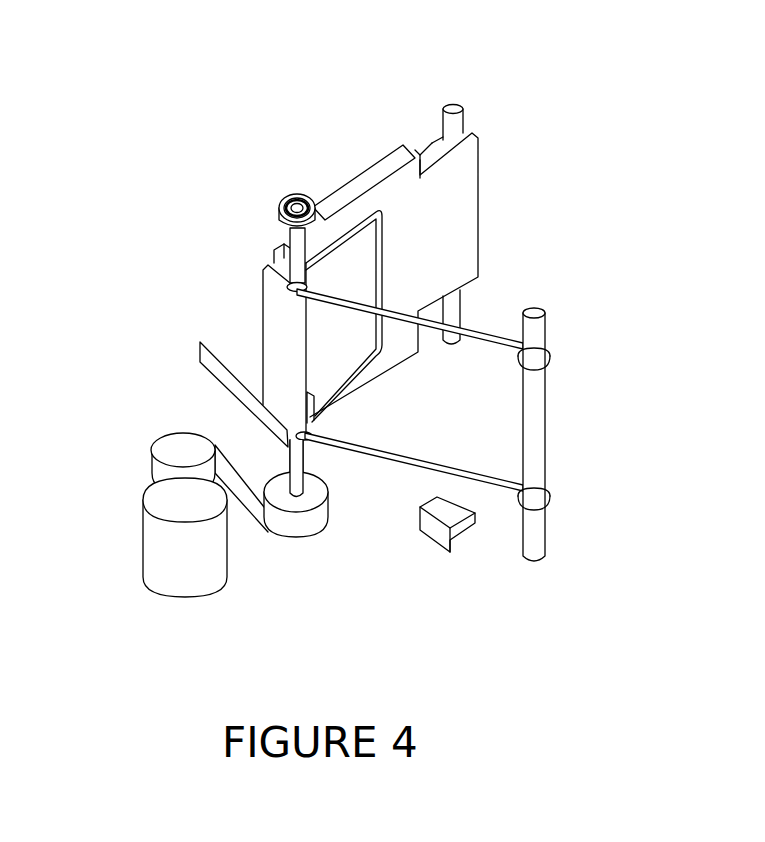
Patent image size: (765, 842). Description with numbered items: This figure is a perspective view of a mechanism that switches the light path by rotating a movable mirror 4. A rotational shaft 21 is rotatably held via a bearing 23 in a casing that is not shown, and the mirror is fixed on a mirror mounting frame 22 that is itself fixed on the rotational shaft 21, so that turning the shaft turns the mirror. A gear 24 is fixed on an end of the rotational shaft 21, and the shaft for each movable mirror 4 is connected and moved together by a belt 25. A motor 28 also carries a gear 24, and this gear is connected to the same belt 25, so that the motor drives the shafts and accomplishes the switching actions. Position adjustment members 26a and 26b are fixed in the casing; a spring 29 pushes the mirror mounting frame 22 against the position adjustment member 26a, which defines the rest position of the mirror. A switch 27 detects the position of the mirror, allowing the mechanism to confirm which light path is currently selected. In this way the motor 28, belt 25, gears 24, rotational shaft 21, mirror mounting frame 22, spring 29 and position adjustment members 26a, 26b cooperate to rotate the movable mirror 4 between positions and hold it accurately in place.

The movable mirror 4 is at (430, 150).
The rotational shaft 21 is at (298, 458).
The mirror mounting frame 22 is at (460, 205).
The bearing 23 is at (278, 222).
The gear 24 is at (163, 480).
The belt 25 is at (167, 407).
The position adjustment member 26a is at (465, 130).
The position adjustment member 26b is at (533, 338).
The switch 27 is at (460, 537).
The motor 28 is at (167, 551).
The spring 29 is at (403, 457).